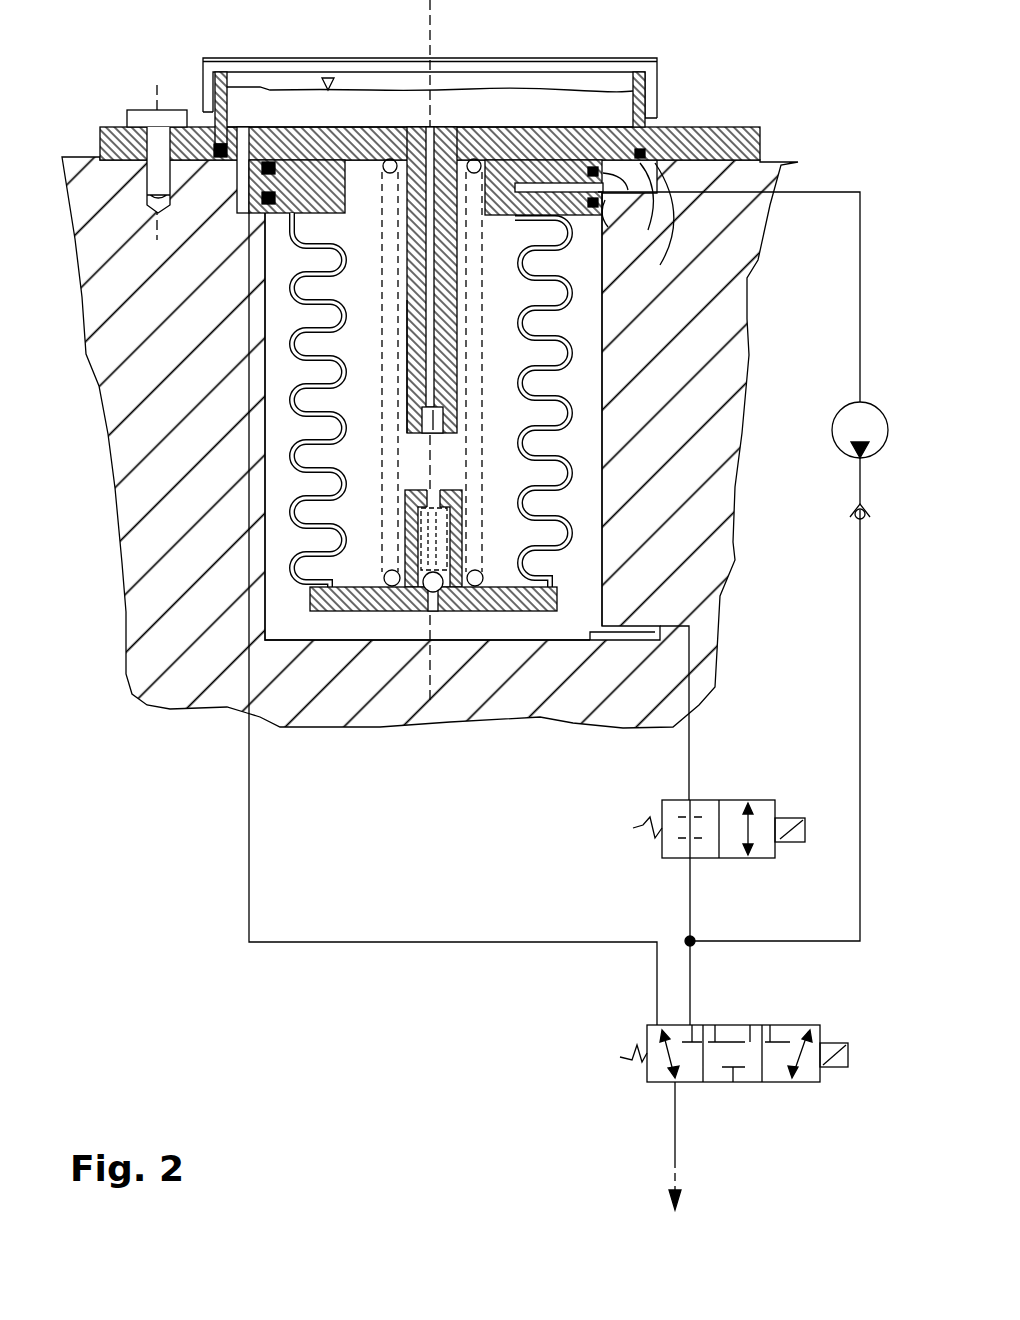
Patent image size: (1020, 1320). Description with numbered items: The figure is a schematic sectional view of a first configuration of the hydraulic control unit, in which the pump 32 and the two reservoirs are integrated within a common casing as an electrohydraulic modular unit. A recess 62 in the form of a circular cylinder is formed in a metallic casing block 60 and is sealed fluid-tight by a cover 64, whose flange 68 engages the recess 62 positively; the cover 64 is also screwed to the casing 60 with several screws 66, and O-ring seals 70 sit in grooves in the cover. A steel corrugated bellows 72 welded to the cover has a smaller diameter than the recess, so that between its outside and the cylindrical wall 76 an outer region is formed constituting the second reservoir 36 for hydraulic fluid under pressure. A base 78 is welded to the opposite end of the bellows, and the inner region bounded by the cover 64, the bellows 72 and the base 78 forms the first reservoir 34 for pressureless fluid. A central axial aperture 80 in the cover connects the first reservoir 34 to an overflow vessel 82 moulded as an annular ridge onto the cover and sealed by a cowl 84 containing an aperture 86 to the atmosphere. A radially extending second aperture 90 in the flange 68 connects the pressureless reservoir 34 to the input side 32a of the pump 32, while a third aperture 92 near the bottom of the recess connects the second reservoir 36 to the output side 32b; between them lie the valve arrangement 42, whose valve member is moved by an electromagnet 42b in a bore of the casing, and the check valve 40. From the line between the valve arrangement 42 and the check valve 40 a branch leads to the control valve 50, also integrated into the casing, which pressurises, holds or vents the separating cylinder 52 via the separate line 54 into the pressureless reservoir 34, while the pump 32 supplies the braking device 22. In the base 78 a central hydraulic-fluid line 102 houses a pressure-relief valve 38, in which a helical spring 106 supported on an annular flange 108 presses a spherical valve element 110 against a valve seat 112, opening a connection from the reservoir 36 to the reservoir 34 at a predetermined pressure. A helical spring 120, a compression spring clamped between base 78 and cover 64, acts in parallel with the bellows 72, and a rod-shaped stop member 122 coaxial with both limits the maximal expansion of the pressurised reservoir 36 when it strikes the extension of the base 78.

The casing block 60 is at (713, 309).
The recess 62 is at (368, 667).
The cover 64 is at (614, 146).
The screws 66 is at (150, 130).
The flange 68 is at (240, 216).
The O-ring seals 70 is at (638, 225).
The corrugated bellows 72 is at (573, 416).
The cylindrical wall 76 is at (603, 332).
The base 78 is at (500, 606).
The axial aperture 80 is at (433, 165).
The overflow vessel 82 is at (647, 88).
The cowl 84 is at (523, 70).
The aperture 86 is at (432, 70).
The second aperture 90 is at (517, 188).
The third aperture 92 is at (585, 640).
The hydraulic-fluid line 102 is at (435, 606).
The helical spring 106 is at (427, 542).
The annular flange 108 is at (462, 497).
The spherical valve element 110 is at (427, 605).
The valve seat 112 is at (370, 612).
The helical spring 120 is at (473, 317).
The stop member 122 is at (412, 368).
The first reservoir 34 is at (525, 412).
The second reservoir 36 is at (600, 502).
The pressure-relief valve 38 is at (450, 540).
The pump 32 is at (832, 437).
The input side 32a is at (858, 395).
The output side 32b is at (858, 470).
The check valve 40 is at (849, 518).
The valve arrangement 42 is at (722, 798).
The electromagnet 42b is at (788, 818).
The control valve 50 is at (733, 1027).
The separating cylinder 52 is at (725, 1150).
The braking device 22 is at (675, 1200).
The separate line 54 is at (545, 941).